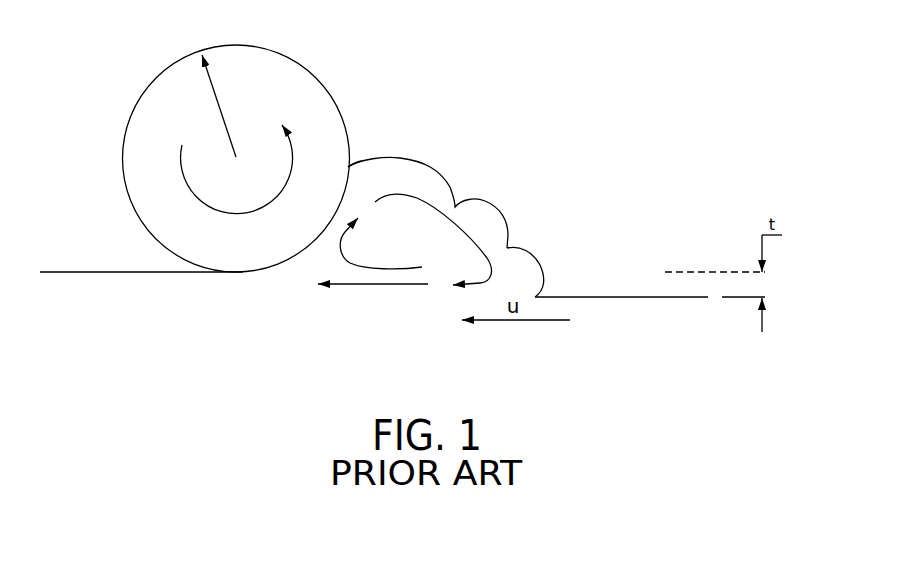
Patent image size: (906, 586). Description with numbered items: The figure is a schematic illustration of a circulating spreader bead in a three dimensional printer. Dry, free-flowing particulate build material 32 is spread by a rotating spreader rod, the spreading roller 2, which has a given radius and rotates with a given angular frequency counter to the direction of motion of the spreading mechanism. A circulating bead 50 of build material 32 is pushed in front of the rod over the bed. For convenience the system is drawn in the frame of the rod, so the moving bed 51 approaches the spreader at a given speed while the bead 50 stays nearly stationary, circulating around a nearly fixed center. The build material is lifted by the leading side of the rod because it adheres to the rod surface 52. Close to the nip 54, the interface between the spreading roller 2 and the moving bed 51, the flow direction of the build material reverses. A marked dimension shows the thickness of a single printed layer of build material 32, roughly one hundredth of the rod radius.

The spreading roller 2 is at (267, 45).
The rod surface 52 is at (355, 158).
The circulating bead 50 is at (517, 226).
The build material 32 is at (526, 272).
The moving bed 51 is at (642, 297).
The nip 54 is at (318, 257).